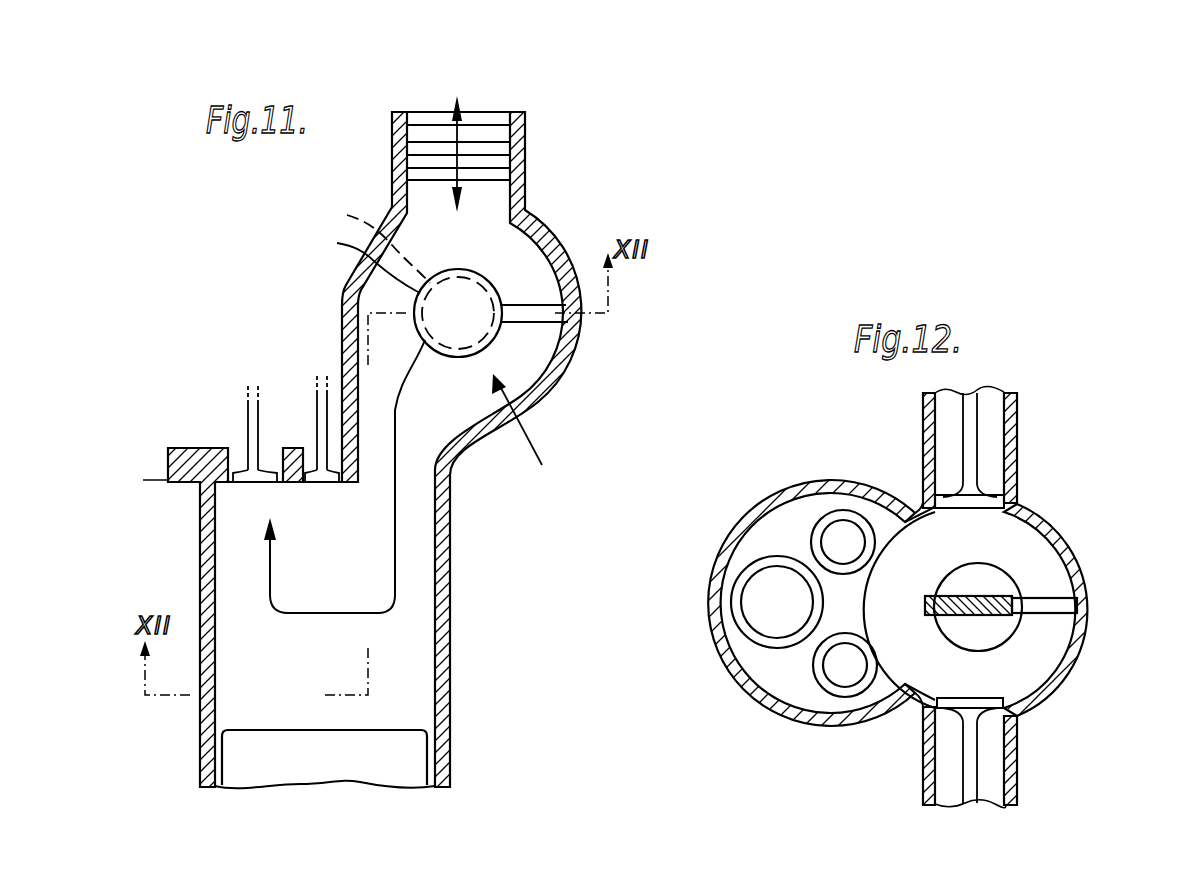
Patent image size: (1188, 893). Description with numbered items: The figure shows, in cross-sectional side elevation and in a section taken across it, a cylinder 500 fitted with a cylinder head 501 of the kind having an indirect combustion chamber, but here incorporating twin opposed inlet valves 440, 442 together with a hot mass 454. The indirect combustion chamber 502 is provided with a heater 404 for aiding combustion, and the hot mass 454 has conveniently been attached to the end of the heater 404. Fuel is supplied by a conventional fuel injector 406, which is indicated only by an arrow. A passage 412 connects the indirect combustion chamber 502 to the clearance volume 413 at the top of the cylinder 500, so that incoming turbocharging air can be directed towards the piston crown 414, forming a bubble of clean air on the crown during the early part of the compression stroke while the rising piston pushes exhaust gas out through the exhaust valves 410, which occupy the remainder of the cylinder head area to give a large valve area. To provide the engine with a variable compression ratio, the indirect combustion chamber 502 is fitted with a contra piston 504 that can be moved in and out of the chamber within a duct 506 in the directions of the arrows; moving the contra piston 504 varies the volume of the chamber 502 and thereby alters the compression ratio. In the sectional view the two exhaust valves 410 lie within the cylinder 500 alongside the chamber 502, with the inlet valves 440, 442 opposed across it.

In FIG. 11, the heater 404 is at (522, 310).
In FIG. 12, the heater 404 is at (1040, 607).
In FIG. 11, the fuel injector 406 is at (527, 431).
In FIG. 11, the exhaust valves 410 is at (312, 424).
In FIG. 12, the exhaust valves 410 is at (777, 600).
In FIG. 11, the passage 412 is at (413, 452).
In FIG. 12, the passage 412 is at (905, 635).
In FIG. 11, the clearance volume 413 is at (352, 540).
In FIG. 11, the piston crown 414 is at (390, 728).
In FIG. 12, the inlet valve 440 is at (905, 518).
In FIG. 11, the inlet valve 442 is at (360, 241).
In FIG. 12, the inlet valve 442 is at (978, 713).
In FIG. 11, the hot mass 454 is at (348, 260).
In FIG. 12, the hot mass 454 is at (1002, 595).
In FIG. 11, the cylinder 500 is at (158, 553).
In FIG. 11, the cylinder head 501 is at (272, 292).
In FIG. 11, the indirect combustion chamber 502 is at (478, 263).
In FIG. 12, the indirect combustion chamber 502 is at (1030, 534).
In FIG. 11, the contra piston 504 is at (490, 157).
In FIG. 12, the contra piston 504 is at (1017, 633).
In FIG. 11, the duct 506 is at (497, 116).